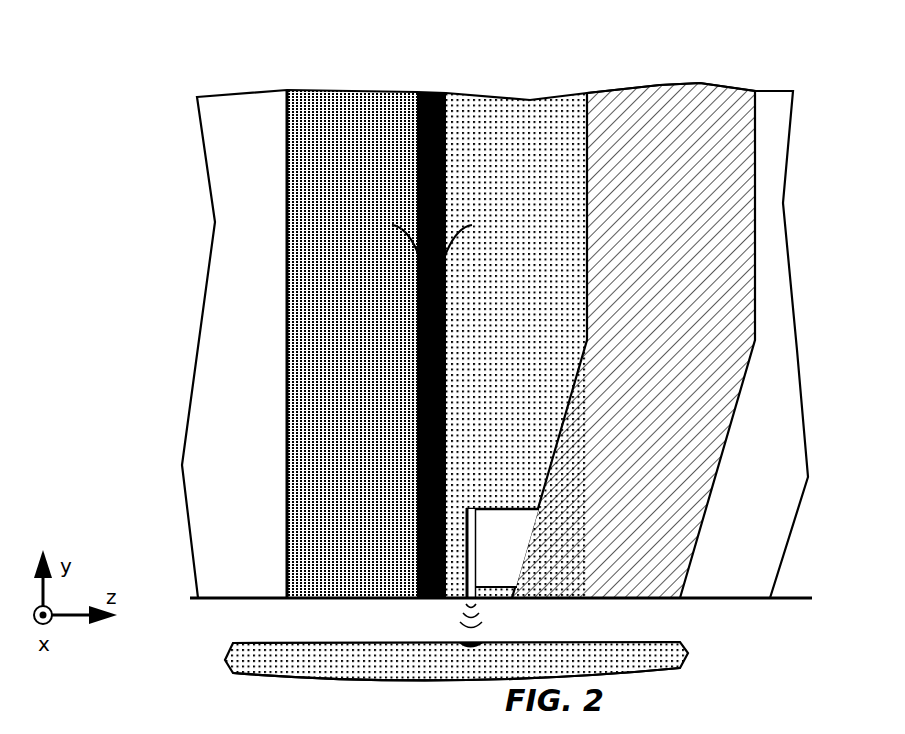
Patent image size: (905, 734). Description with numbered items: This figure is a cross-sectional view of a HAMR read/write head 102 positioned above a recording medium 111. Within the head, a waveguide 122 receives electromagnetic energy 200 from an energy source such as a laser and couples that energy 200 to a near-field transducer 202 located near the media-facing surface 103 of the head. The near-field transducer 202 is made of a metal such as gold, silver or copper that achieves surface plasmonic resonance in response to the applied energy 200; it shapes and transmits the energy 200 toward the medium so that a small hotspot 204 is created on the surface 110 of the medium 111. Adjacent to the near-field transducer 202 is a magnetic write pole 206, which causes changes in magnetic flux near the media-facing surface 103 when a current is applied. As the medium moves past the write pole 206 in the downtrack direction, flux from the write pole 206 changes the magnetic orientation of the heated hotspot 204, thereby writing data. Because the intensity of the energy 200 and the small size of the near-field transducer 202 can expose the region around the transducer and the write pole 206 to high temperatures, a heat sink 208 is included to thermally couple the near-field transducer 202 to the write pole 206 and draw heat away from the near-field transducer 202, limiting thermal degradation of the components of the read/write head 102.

The HAMR read/write head 102 is at (178, 60).
The waveguide 122 is at (581, 62).
The magnetic write pole 206 is at (682, 85).
The electromagnetic energy 200 is at (405, 262).
The near-field transducer 202 is at (465, 602).
The heat sink 208 is at (492, 578).
The media-facing surface 103 is at (742, 600).
The surface of medium 110 is at (637, 656).
The medium 111 is at (665, 652).
The hotspot 204 is at (470, 646).